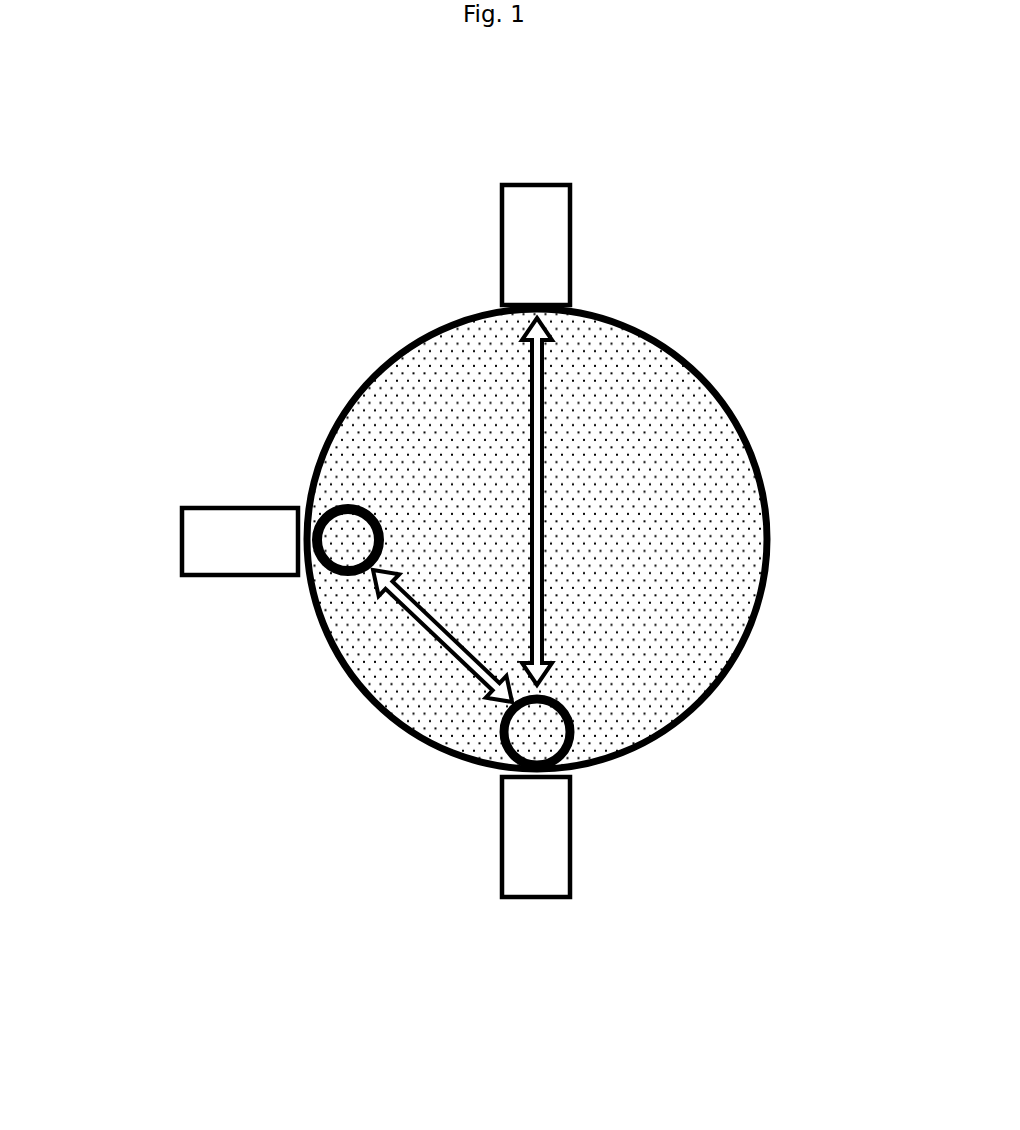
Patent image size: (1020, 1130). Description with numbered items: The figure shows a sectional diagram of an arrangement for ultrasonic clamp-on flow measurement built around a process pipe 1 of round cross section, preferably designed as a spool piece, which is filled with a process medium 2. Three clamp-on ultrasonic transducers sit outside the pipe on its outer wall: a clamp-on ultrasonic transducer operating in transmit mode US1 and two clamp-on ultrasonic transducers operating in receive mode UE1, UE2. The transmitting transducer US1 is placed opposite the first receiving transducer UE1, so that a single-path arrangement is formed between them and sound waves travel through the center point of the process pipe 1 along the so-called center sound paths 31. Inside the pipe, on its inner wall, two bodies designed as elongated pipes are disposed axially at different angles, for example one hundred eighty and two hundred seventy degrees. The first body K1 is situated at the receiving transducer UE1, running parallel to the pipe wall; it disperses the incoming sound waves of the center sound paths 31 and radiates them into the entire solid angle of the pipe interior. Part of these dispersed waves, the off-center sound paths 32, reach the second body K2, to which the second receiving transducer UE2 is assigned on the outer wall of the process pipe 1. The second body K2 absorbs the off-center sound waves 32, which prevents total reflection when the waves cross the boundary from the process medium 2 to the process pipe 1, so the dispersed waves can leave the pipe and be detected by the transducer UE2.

The process pipe 1 is at (501, 519).
The process medium 2 is at (557, 536).
The center sound paths 31 is at (709, 501).
The off-center sound paths 32 is at (413, 693).
The first body K1 is at (637, 803).
The second body K2 is at (271, 619).
The clamp-on ultrasonic transducer operating in transmit mode US1 is at (536, 179).
The first clamp-on ultrasonic transducer operating in receive mode UE1 is at (536, 924).
The second clamp-on ultrasonic transducer operating in receive mode UE2 is at (165, 541).